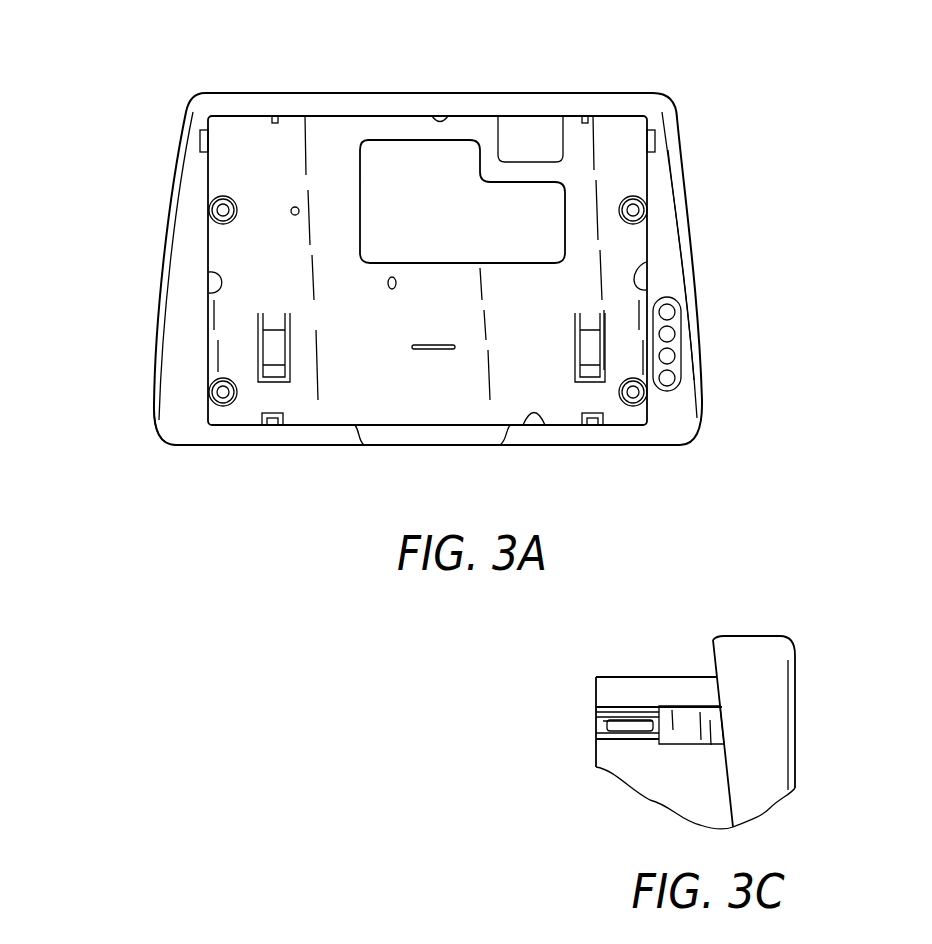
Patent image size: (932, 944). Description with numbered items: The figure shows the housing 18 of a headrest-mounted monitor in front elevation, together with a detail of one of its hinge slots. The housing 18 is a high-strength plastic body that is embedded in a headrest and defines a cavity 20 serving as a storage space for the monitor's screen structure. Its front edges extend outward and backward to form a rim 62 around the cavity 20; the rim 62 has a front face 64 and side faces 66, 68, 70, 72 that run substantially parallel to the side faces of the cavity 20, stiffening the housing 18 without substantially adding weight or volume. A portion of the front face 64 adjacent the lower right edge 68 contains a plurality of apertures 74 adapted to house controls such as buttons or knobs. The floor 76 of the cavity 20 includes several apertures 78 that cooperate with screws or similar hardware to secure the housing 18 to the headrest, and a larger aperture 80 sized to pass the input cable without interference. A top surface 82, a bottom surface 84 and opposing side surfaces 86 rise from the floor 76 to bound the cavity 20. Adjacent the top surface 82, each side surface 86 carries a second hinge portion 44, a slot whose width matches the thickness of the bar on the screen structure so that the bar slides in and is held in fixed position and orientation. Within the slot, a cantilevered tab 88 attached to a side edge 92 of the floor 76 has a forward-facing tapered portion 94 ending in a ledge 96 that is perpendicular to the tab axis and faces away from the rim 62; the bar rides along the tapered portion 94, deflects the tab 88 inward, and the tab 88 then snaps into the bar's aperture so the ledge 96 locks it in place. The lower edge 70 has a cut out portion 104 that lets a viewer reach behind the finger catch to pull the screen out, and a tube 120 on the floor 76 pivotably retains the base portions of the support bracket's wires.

In FIG. 3A, the housing 18 is at (676, 85).
In FIG. 3C, the housing 18 is at (805, 632).
In FIG. 3A, the cavity 20 is at (373, 392).
In FIG. 3A, the second hinge portion 44 is at (202, 135).
In FIG. 3C, the second hinge portion 44 is at (680, 710).
In FIG. 3A, the rim 62 is at (678, 232).
In FIG. 3C, the rim 62 is at (750, 656).
In FIG. 3A, the front face 64 is at (183, 346).
In FIG. 3A, the side face 66 is at (258, 93).
In FIG. 3A, the lower right edge 68 is at (698, 250).
In FIG. 3A, the lower edge 70 is at (603, 448).
In FIG. 3A, the side face 72 is at (152, 397).
In FIG. 3A, the apertures 74 is at (673, 378).
In FIG. 3A, the floor 76 is at (343, 135).
In FIG. 3A, the apertures 78 is at (220, 211).
In FIG. 3A, the aperture 80 is at (540, 133).
In FIG. 3A, the top surface 82 is at (441, 118).
In FIG. 3A, the bottom surface 84 is at (540, 425).
In FIG. 3A, the side surfaces 86 is at (214, 288).
In FIG. 3C, the tab 88 is at (610, 727).
In FIG. 3C, the side edge 92 is at (603, 718).
In FIG. 3C, the tapered portion 94 is at (648, 730).
In FIG. 3C, the ledge 96 is at (638, 716).
In FIG. 3A, the cut out portion 104 is at (402, 437).
In FIG. 3A, the tube 120 is at (440, 349).